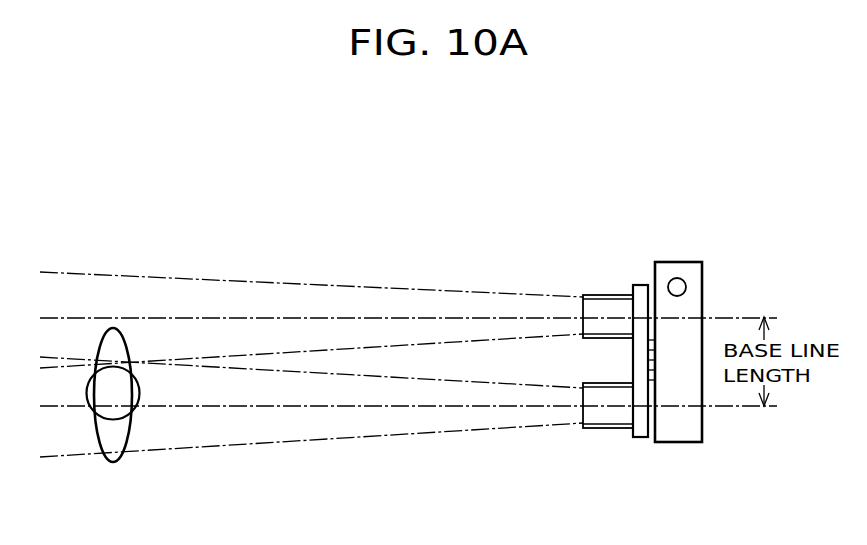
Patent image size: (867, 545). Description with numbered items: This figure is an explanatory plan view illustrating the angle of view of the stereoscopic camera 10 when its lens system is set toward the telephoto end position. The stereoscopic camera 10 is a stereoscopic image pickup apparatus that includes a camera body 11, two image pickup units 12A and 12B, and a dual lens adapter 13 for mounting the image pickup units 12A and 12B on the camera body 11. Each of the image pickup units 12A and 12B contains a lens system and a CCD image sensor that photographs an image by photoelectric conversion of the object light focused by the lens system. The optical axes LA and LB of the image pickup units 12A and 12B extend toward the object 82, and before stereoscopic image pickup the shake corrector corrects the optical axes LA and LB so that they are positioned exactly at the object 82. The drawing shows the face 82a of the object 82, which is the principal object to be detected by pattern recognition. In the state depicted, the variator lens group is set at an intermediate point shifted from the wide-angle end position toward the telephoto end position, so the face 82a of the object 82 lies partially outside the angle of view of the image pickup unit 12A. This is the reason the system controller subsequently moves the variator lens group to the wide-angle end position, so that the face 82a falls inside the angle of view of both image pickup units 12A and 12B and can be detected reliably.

The stereoscopic camera 10 is at (638, 217).
The camera body 11 is at (678, 262).
The image pickup unit 12A is at (610, 295).
The image pickup unit 12B is at (618, 430).
The dual lens adapter 13 is at (642, 438).
The object 82 is at (113, 463).
The face 82a is at (140, 392).
The optical axis LA is at (368, 318).
The optical axis LB is at (368, 407).